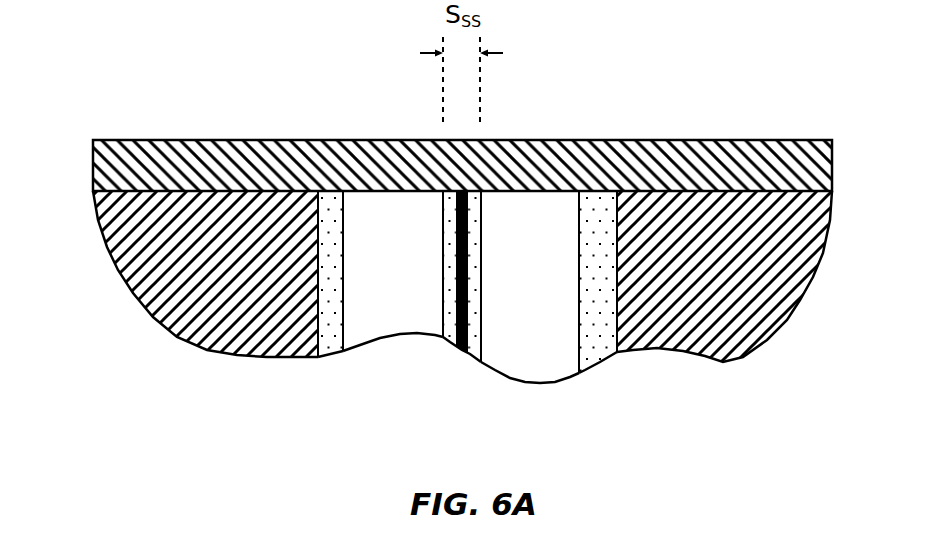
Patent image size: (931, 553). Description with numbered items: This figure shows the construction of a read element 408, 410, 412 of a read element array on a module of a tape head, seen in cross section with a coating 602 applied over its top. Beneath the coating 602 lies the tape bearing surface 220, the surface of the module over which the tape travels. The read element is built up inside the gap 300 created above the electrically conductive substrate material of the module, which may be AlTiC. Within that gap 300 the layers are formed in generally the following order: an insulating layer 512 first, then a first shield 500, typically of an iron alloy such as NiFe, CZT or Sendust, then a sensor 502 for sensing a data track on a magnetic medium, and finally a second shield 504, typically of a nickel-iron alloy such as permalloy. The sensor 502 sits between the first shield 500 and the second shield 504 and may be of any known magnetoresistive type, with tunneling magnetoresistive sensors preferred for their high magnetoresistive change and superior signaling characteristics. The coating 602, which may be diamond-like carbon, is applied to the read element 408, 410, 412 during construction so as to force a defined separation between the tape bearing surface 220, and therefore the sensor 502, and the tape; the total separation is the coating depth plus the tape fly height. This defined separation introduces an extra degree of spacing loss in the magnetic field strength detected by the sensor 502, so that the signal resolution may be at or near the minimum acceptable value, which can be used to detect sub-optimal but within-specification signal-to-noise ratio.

The tape bearing surface 220 is at (167, 122).
The coating 602 is at (703, 140).
The insulating layer 512 is at (213, 353).
The gap 300 is at (332, 358).
The first shield 500 is at (377, 352).
The sensor 502 is at (462, 353).
The second shield 504 is at (553, 383).
The read element 408 is at (608, 385).
The read element 410 is at (598, 283).
The read element 412 is at (598, 362).